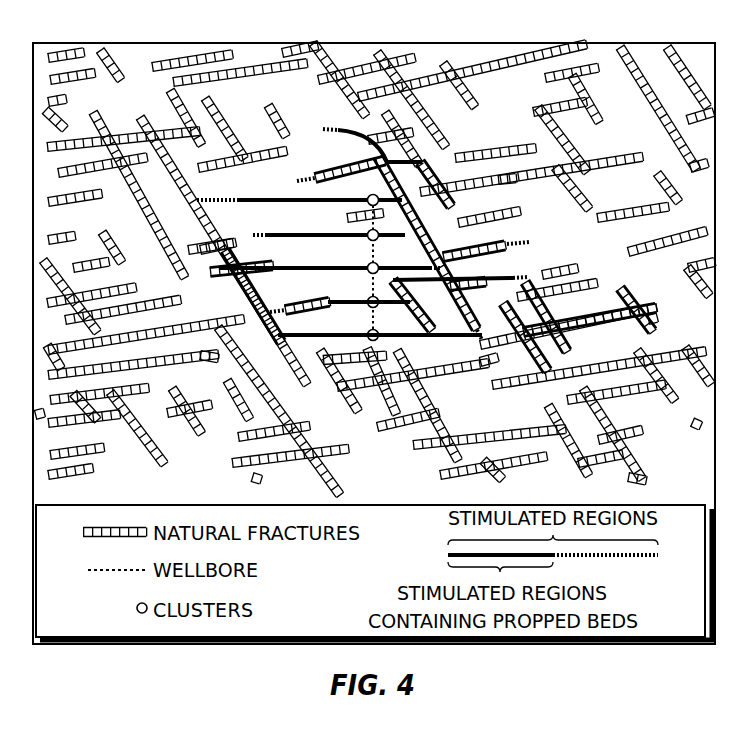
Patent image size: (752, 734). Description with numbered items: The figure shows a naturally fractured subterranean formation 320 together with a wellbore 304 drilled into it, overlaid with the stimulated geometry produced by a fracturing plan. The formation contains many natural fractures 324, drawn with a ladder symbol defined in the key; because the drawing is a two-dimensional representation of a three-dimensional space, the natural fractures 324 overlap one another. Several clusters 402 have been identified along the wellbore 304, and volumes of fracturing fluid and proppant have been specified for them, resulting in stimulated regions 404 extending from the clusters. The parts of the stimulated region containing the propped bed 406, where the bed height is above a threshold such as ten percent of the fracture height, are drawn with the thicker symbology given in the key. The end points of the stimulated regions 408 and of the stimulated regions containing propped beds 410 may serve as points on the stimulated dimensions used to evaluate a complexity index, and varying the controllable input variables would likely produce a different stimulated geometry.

The subterranean formation 320 is at (284, 194).
The natural fractures 324 is at (591, 165).
The clusters 402 is at (366, 244).
The wellbore 304 is at (360, 300).
The parts of the stimulated region containing the propped bed 406 is at (303, 172).
The stimulated regions containing propped beds 410 is at (497, 247).
The stimulated regions 408 is at (531, 246).
The stimulated regions 404 is at (402, 338).